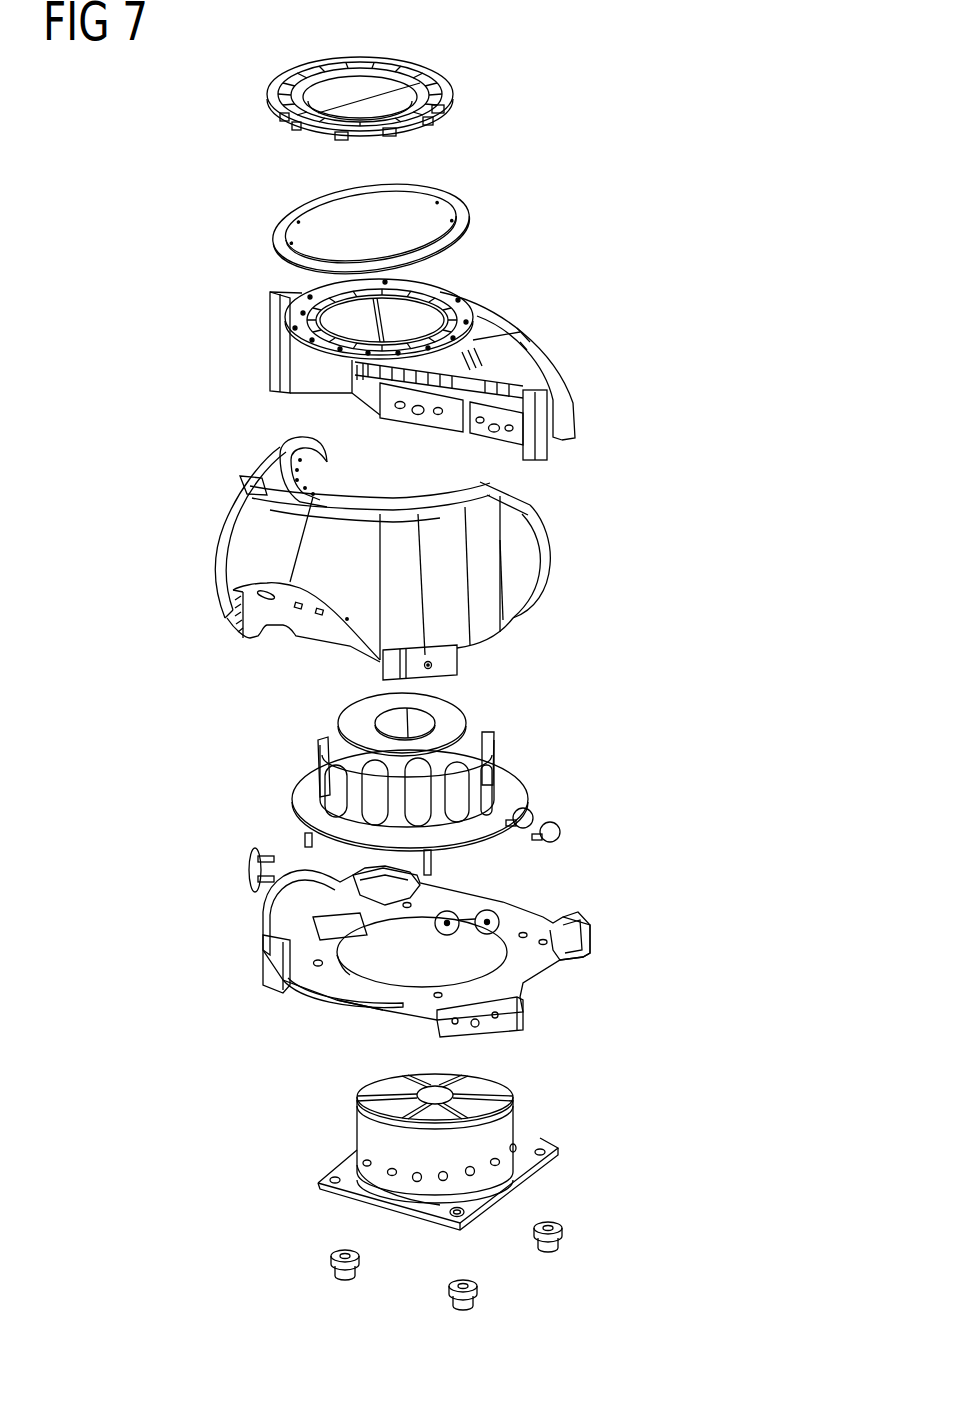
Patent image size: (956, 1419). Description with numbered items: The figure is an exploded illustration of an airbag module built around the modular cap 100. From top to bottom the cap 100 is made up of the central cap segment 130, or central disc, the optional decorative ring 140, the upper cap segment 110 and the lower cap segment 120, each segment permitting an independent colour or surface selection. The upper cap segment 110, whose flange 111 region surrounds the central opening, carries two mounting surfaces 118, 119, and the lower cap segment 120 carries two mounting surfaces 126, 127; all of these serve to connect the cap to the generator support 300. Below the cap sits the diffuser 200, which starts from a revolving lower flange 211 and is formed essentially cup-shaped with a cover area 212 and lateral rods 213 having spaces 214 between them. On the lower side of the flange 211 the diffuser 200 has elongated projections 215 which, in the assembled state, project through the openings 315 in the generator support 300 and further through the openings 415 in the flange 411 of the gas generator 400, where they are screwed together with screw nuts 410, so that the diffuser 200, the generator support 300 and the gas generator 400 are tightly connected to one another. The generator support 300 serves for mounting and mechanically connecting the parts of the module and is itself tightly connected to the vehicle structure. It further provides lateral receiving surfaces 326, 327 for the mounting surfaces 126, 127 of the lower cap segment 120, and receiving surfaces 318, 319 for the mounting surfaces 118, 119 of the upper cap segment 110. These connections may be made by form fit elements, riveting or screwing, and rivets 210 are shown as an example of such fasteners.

The cap 100 is at (598, 271).
The upper cap segment 110 is at (407, 383).
The flange 111 is at (300, 334).
The mounting surface 118 is at (430, 417).
The mounting surface 119 is at (503, 440).
The lower cap segment 120 is at (392, 558).
The mounting surface 126 is at (247, 640).
The mounting surface 127 is at (462, 668).
The central cap segment 130 is at (418, 84).
The decorative ring 140 is at (468, 224).
The diffuser 200 is at (389, 779).
The rivet 210 is at (561, 826).
The revolving lower flange 211 is at (515, 778).
The cover area 212 is at (370, 703).
The lateral rod 213 is at (316, 774).
The space 214 is at (372, 800).
The elongated projection 215 is at (305, 835).
The generator support 300 is at (412, 955).
The opening 315 is at (316, 968).
The receiving surface 318 is at (472, 883).
The projection 319 is at (527, 894).
The lateral receiving surface 326 is at (270, 967).
The lateral receiving surface 327 is at (500, 1023).
The gas generator 400 is at (427, 1152).
The screw nut 410 is at (563, 1238).
The flange 411 is at (527, 1163).
The opening 415 is at (330, 1183).